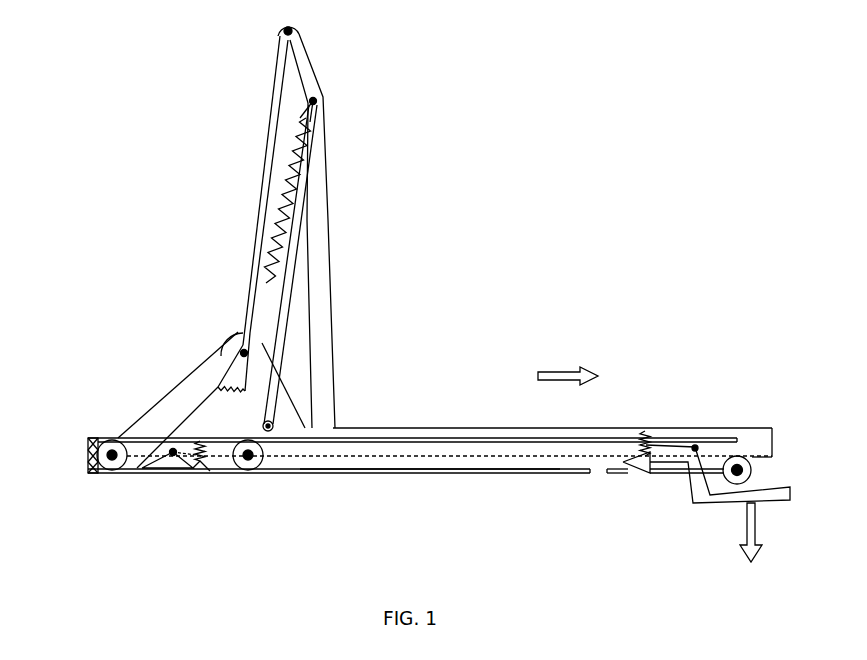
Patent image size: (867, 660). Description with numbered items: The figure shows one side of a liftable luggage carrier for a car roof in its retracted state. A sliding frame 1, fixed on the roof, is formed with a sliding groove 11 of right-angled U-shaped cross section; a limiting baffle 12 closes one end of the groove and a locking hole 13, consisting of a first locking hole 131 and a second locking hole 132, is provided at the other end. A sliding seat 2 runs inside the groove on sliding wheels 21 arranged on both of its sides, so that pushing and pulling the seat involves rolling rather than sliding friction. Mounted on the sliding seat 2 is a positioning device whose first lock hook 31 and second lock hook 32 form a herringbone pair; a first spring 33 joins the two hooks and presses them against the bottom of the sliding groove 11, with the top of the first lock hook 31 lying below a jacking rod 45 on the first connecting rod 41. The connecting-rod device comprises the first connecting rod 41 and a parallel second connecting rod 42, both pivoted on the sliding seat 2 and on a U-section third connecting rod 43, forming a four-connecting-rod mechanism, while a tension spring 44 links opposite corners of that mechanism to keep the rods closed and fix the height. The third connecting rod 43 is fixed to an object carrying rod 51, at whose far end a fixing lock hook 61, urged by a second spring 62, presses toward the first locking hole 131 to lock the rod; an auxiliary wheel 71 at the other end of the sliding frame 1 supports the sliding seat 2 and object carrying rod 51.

The sliding frame 1 is at (440, 472).
The sliding groove 11 is at (507, 463).
The limiting baffle 12 is at (88, 457).
The locking hole 13 is at (608, 543).
The first locking hole 131 is at (643, 475).
The second locking hole 132 is at (597, 475).
The sliding seat 2 is at (175, 375).
The sliding wheel 21 is at (113, 467).
The first lock hook 31 is at (202, 422).
The second lock hook 32 is at (189, 467).
The first spring 33 is at (202, 462).
The first connecting rod 41 is at (270, 125).
The second connecting rod 42 is at (293, 297).
The third connecting rod 43 is at (328, 193).
The tension spring 44 is at (278, 210).
The jacking rod 45 is at (238, 373).
The object carrying rod 51 is at (380, 428).
The fixing lock hook 61 is at (717, 513).
The second spring 62 is at (648, 437).
The auxiliary wheel 71 is at (752, 467).